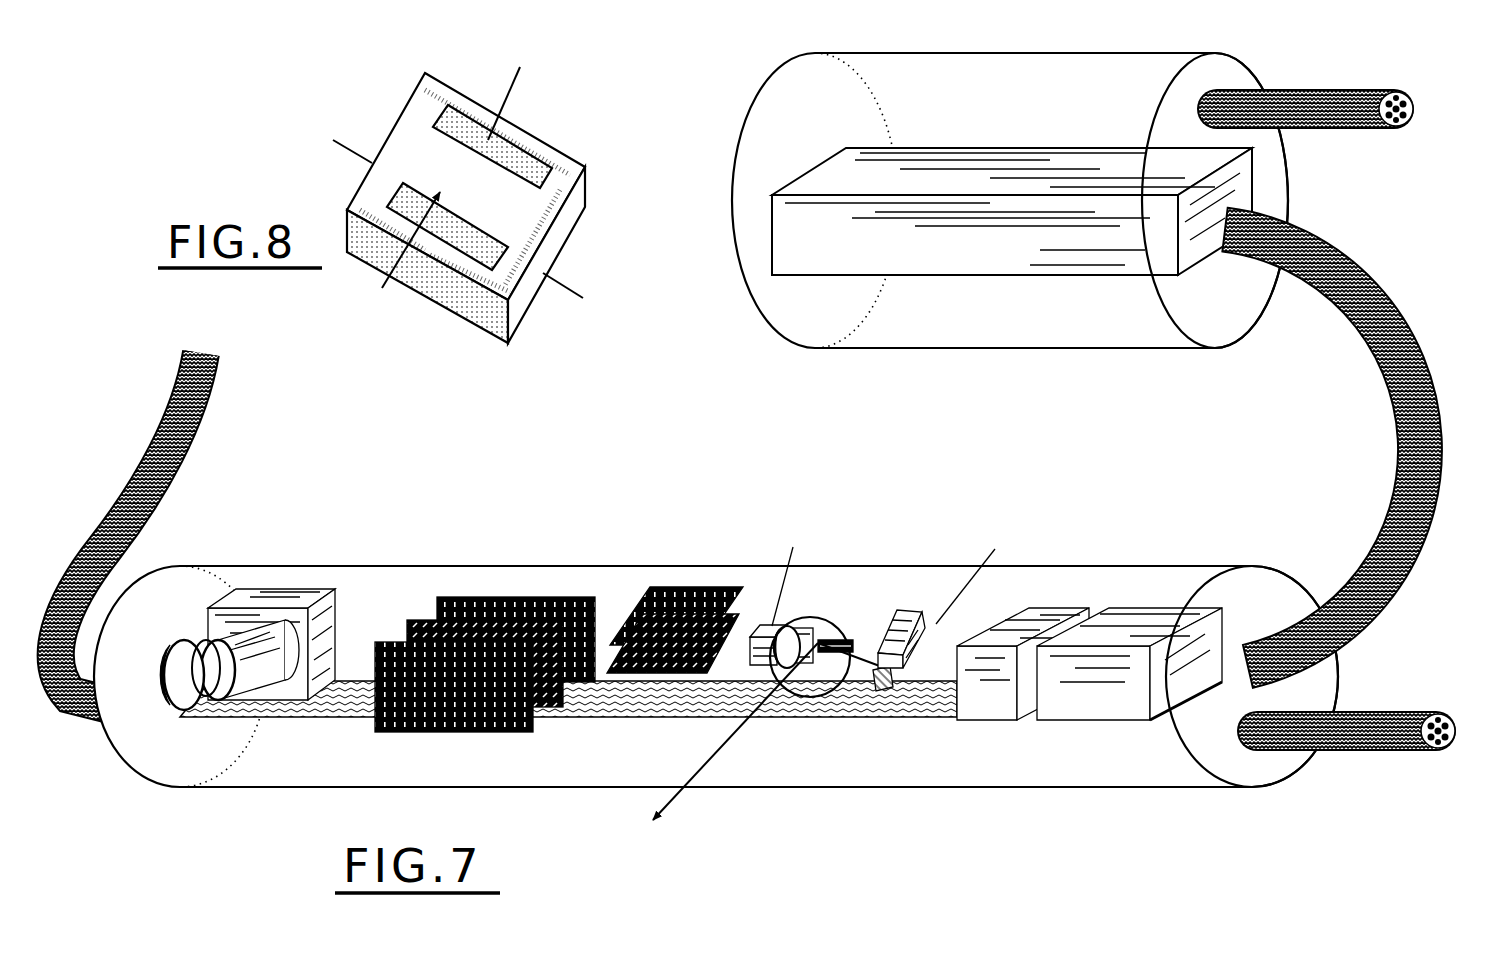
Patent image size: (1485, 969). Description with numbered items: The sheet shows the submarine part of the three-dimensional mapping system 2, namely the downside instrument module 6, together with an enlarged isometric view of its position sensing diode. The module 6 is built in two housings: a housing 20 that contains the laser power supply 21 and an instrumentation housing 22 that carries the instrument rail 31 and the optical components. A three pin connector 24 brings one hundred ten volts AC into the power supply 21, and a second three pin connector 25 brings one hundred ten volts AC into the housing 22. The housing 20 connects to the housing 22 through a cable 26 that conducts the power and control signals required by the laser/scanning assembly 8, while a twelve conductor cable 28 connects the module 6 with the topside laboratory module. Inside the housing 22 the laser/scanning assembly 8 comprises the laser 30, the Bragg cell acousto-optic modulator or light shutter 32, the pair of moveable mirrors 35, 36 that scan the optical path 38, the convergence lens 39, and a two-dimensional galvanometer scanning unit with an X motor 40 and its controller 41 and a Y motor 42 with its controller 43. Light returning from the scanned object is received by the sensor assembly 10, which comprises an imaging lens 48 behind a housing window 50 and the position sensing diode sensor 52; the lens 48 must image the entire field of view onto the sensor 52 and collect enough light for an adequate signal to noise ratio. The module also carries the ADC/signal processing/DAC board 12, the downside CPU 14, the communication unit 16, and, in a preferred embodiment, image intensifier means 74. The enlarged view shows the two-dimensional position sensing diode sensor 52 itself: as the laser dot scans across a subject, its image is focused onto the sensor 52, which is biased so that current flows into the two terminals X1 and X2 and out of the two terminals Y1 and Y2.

In FIG. 7, the 3-D mapping system 2 is at (558, 540).
In FIG. 7, the downside instrument module 6 is at (675, 562).
In FIG. 7, the laser/scanning assembly 8 is at (940, 620).
In FIG. 7, the sensor assembly 10 is at (301, 640).
In FIG. 7, the ADC/Signal Processing/DAC board 12 is at (463, 595).
In FIG. 7, the downside CPU 14 is at (440, 732).
In FIG. 7, the communication unit 16 is at (413, 618).
In FIG. 7, the housing 20 is at (1013, 330).
In FIG. 7, the laser power supply 21 is at (928, 158).
In FIG. 7, the instrumentation housing 22 is at (862, 582).
In FIG. 7, the 3 pin connector 24 is at (1292, 128).
In FIG. 7, the 3 pin connector 25 is at (1347, 710).
In FIG. 7, the cable 26 is at (1392, 492).
In FIG. 7, the twelve conductor cable 28 is at (173, 484).
In FIG. 7, the laser 30 is at (1108, 616).
In FIG. 7, the instrument rail 31 is at (648, 712).
In FIG. 7, the acousto-optic modulator 32 is at (1015, 618).
In FIG. 7, the moveable mirror 35 is at (887, 692).
In FIG. 7, the moveable mirror 36 is at (848, 643).
In FIG. 7, the optical path 38 is at (722, 756).
In FIG. 7, the convergence lens 39 is at (831, 632).
In FIG. 7, the X motor 40 is at (954, 600).
In FIG. 7, the X motor controller 41 is at (630, 615).
In FIG. 7, the Y motor 42 is at (788, 624).
In FIG. 7, the Y motor controller 43 is at (749, 636).
In FIG. 7, the imaging lens 48 is at (245, 670).
In FIG. 7, the housing window 50 is at (163, 662).
In FIG. 8, the position sensing diode sensor 52 is at (563, 168).
In FIG. 7, the image intensifier means 74 is at (338, 652).
In FIG. 8, the terminal X1 is at (405, 254).
In FIG. 8, the terminal X2 is at (518, 92).
In FIG. 8, the terminal Y1 is at (577, 291).
In FIG. 8, the terminal Y2 is at (338, 142).